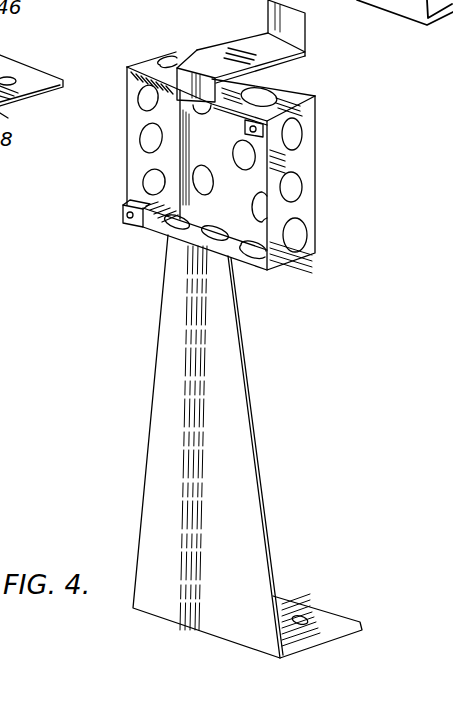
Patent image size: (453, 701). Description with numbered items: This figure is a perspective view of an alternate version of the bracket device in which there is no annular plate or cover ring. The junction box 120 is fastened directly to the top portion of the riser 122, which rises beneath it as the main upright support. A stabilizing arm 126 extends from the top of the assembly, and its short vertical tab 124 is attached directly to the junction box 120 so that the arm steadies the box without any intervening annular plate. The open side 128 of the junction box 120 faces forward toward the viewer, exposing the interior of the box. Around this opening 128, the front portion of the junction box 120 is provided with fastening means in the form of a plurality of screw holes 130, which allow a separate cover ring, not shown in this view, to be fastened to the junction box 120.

The junction box 120 is at (303, 212).
The riser 122 is at (158, 366).
The short vertical tab 124 is at (182, 78).
The stabilizing arm 126 is at (247, 52).
The open side 128 is at (195, 143).
The screw holes 130 is at (263, 133).